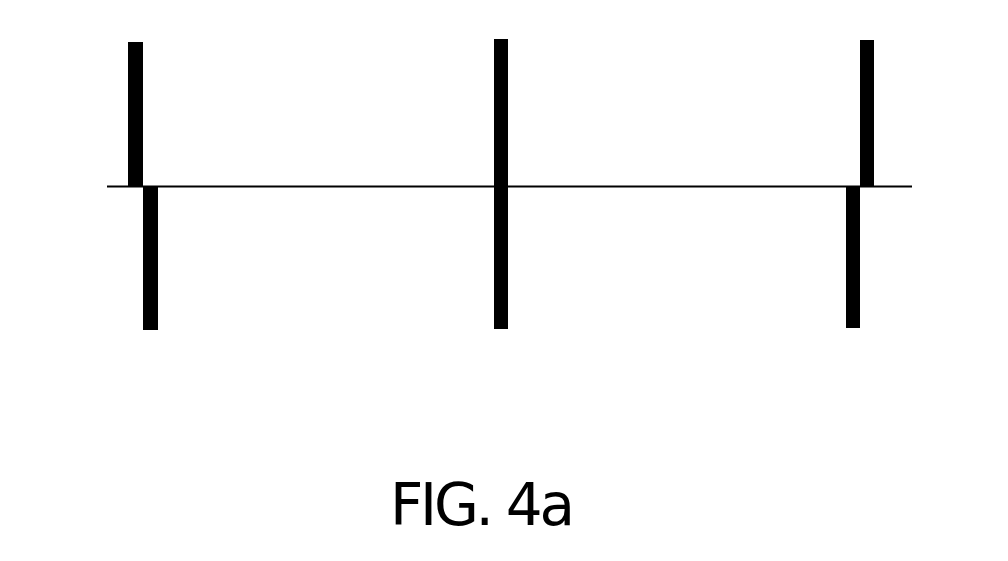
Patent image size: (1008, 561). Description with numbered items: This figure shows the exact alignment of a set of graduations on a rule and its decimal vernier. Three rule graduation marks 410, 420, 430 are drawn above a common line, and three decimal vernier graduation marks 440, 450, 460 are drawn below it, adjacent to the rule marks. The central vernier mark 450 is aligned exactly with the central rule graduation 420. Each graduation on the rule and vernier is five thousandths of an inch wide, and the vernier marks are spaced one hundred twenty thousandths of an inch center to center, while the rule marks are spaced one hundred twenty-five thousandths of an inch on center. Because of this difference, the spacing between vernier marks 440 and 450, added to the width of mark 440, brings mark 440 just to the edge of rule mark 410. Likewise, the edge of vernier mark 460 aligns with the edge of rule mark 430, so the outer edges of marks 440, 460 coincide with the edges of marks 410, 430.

The rule graduation mark 410 is at (128, 68).
The rule graduation mark 420 is at (494, 55).
The rule graduation mark 430 is at (860, 57).
The decimal vernier graduation mark 440 is at (143, 315).
The decimal vernier graduation mark 450 is at (494, 314).
The decimal vernier graduation mark 460 is at (846, 313).